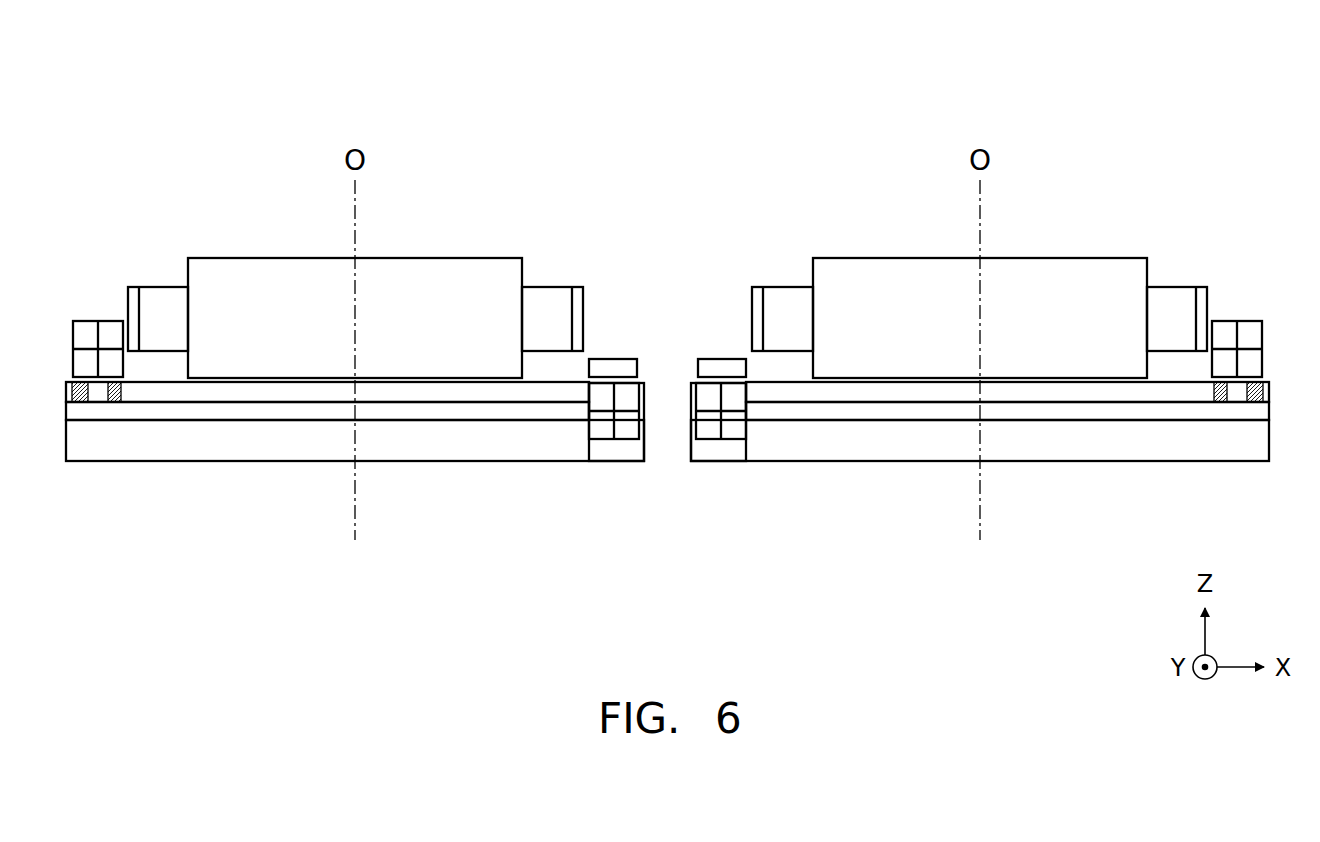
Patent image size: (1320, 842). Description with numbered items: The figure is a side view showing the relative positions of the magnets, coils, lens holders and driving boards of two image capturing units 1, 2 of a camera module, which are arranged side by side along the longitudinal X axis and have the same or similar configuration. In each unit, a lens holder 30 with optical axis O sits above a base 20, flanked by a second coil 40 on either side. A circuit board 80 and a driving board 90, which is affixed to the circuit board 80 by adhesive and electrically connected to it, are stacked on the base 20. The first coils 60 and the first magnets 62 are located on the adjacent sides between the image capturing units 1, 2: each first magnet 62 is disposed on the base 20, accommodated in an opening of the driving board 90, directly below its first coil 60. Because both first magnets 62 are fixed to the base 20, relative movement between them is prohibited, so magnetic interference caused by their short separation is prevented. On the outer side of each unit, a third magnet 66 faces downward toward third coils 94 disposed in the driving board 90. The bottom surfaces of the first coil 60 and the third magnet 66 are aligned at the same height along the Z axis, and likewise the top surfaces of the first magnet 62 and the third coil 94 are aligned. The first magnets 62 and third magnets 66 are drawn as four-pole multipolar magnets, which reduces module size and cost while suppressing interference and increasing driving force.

The image capturing unit 1 is at (93, 154).
The image capturing unit 2 is at (1242, 154).
The base 20 is at (305, 445).
The lens holder 30 is at (457, 270).
The second coil 40 is at (165, 300).
The first coil 60 is at (612, 367).
The first magnet 62 is at (612, 432).
The third magnet 66 is at (95, 320).
The circuit board 80 is at (206, 410).
The driving board 90 is at (457, 392).
The third coil 94 is at (80, 402).